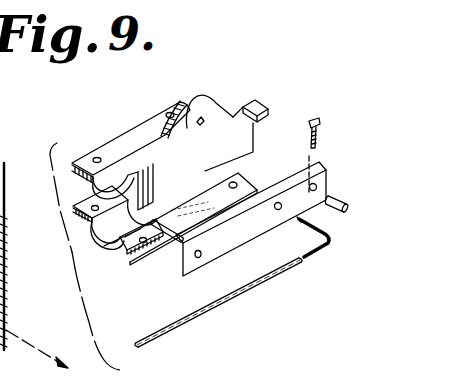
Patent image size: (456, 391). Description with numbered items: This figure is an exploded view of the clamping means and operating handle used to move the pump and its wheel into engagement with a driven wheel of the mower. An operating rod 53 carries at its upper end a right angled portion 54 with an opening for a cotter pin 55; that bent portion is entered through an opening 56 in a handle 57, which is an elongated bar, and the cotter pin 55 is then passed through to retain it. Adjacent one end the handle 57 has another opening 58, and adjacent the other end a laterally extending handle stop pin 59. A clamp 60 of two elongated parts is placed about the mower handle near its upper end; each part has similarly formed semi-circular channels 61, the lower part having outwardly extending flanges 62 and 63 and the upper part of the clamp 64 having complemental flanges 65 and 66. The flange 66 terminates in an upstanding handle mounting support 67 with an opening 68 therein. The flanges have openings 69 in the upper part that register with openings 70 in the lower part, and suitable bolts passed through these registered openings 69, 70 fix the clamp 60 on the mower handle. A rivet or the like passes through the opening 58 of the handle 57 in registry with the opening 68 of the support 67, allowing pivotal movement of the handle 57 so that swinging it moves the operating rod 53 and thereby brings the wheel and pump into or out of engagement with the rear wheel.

The operating rod 53 is at (210, 311).
The right angled portion 54 is at (313, 221).
The cotter pin 55 is at (321, 130).
The opening 56 is at (283, 214).
The handle 57 is at (264, 196).
The opening 58 is at (333, 190).
The handle stop pin 59 is at (167, 250).
The clamp 60 is at (238, 101).
The semi-circular channels 61 is at (91, 182).
The flange 62 is at (97, 234).
The flange 63 is at (122, 253).
The upper part of the clamp 64 is at (115, 146).
The flange 65 is at (105, 142).
The flange 66 is at (155, 178).
The handle mounting support 67 is at (192, 110).
The opening 68 is at (217, 100).
The openings 69 is at (168, 113).
The openings 70 is at (142, 246).